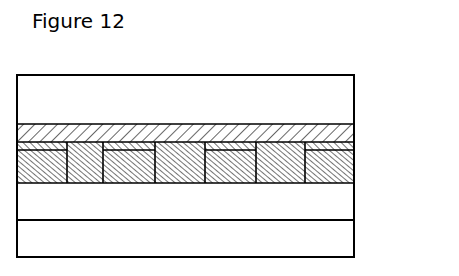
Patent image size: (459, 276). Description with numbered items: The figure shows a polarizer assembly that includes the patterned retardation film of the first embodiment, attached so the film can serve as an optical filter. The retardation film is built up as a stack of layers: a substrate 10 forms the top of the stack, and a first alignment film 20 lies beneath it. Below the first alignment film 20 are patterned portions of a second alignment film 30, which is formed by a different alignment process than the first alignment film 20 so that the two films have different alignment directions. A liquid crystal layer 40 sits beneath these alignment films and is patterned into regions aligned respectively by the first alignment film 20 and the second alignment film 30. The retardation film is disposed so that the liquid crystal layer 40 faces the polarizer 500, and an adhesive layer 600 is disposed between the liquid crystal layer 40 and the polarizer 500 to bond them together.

The substrate 10 is at (348, 100).
The first alignment film 20 is at (348, 127).
The second alignment film 30 is at (348, 147).
The liquid crystal layer 40 is at (348, 173).
The adhesive layer 600 is at (348, 208).
The polarizer 500 is at (348, 244).